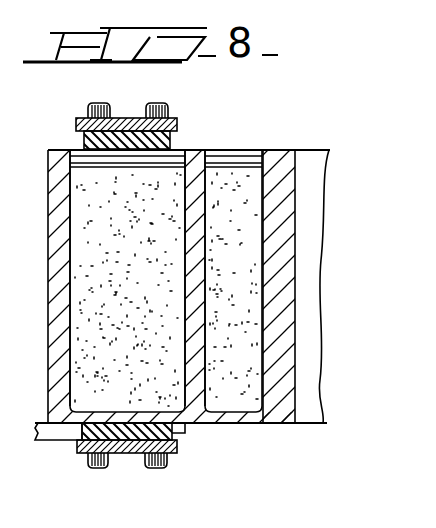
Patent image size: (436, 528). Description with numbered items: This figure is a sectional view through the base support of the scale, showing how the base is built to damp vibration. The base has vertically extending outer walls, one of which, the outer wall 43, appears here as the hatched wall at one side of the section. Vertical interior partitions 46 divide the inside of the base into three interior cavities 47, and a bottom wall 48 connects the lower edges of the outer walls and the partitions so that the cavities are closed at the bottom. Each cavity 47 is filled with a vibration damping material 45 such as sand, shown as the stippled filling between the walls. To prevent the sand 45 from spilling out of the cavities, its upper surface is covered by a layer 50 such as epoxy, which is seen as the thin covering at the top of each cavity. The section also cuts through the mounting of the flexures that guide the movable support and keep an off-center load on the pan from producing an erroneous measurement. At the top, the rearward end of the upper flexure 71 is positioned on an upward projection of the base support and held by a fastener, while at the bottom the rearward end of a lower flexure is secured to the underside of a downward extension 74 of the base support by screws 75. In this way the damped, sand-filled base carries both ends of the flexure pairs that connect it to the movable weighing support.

The outer wall 43 is at (60, 283).
The vibration damping material 45 is at (148, 213).
The interior partition 46 is at (196, 176).
The interior cavity 47 is at (72, 338).
The bottom wall 48 is at (235, 418).
The layer 50 is at (97, 165).
The upper flexure 71 is at (175, 128).
The downward extension 74 is at (180, 424).
The screw 75 is at (111, 469).